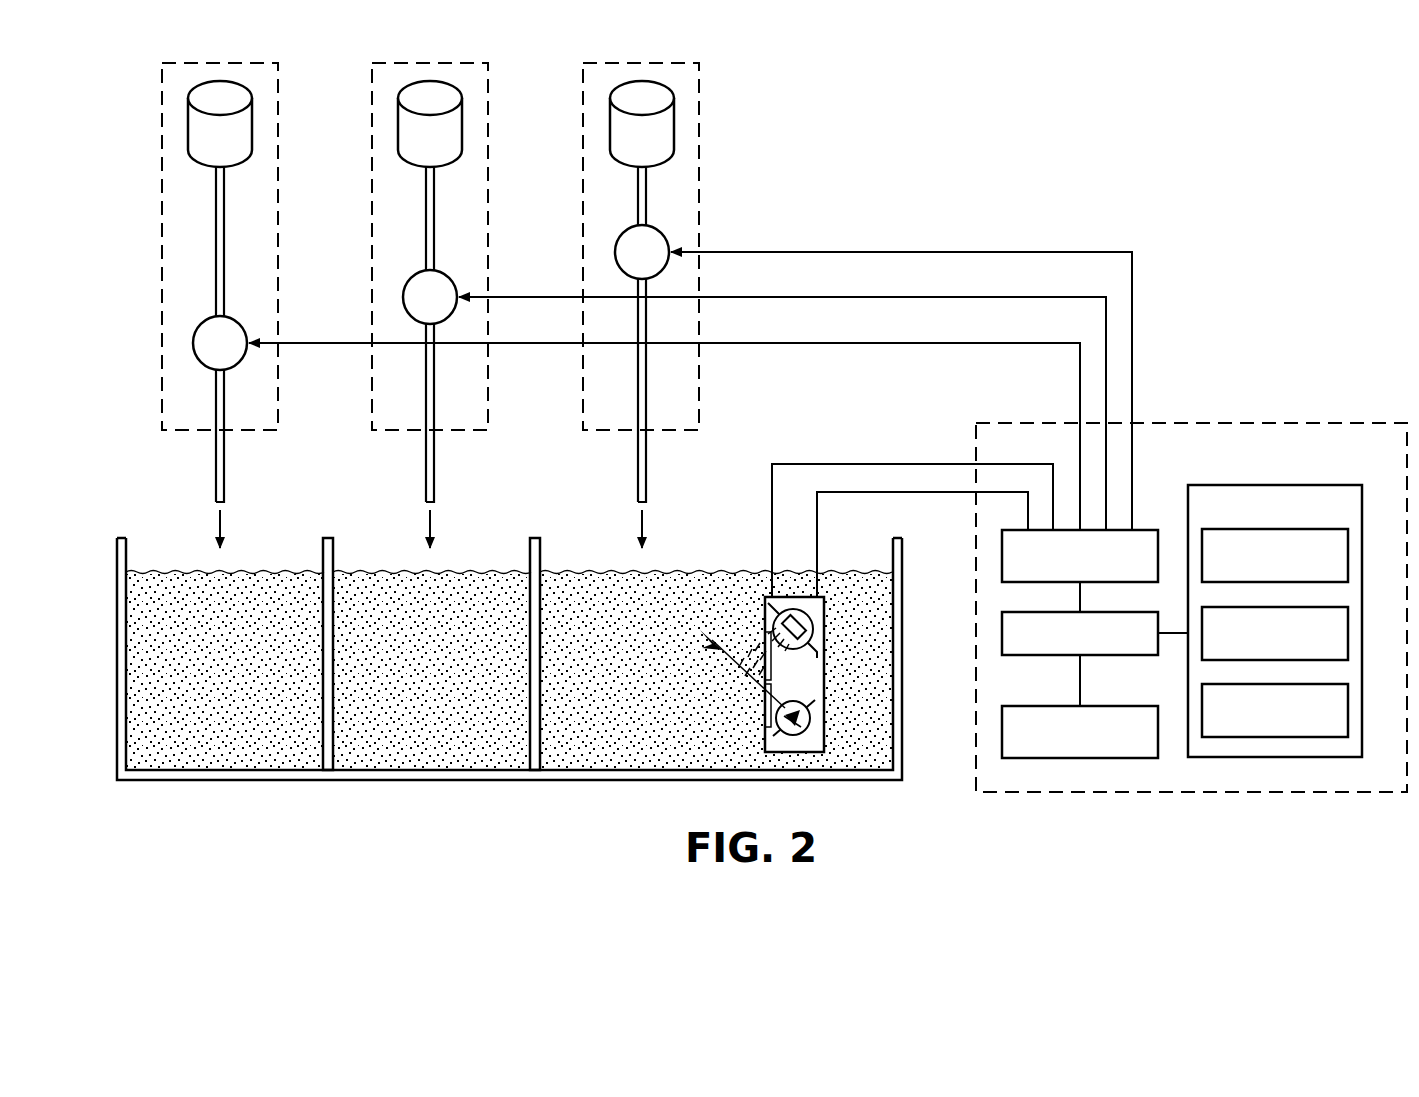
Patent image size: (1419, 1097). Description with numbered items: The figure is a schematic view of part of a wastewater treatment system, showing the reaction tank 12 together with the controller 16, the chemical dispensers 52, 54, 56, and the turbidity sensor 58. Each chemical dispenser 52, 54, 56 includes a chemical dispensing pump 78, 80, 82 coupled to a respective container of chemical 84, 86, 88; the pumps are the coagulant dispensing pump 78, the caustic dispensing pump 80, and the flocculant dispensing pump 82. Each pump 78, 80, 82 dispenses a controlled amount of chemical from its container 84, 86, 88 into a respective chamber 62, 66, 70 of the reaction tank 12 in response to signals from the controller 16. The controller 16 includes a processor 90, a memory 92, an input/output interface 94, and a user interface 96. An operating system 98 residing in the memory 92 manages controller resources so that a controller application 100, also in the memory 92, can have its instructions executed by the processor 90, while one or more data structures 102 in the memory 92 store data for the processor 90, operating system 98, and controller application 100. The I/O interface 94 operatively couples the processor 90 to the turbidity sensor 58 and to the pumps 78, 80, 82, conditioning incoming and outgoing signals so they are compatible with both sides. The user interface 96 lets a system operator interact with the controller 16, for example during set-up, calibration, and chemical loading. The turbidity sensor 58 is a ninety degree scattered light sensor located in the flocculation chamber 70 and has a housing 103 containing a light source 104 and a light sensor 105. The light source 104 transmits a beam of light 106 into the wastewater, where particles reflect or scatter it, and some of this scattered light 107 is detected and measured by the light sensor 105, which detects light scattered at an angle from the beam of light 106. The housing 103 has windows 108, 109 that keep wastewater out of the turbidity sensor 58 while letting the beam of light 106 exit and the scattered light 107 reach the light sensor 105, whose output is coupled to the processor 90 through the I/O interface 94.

The reaction tank 12 is at (138, 493).
The controller 16 is at (1303, 424).
The chemical dispenser 52 is at (280, 128).
The chemical dispenser 54 is at (490, 128).
The chemical dispenser 56 is at (701, 128).
The turbidity sensor 58 is at (810, 672).
The chamber 62 is at (192, 585).
The chamber 66 is at (404, 582).
The flocculation chamber 70 is at (612, 582).
The coagulant dispensing pump 78 is at (234, 322).
The caustic dispensing pump 80 is at (444, 276).
The flocculant dispensing pump 82 is at (656, 231).
The container of chemical 84 is at (231, 156).
The container of chemical 86 is at (441, 156).
The container of chemical 88 is at (653, 156).
The processor 90 is at (1050, 657).
The memory 92 is at (1342, 486).
The input/output interface 94 is at (1143, 535).
The user interface 96 is at (1136, 713).
The operating system 98 is at (1348, 556).
The controller application 100 is at (1348, 621).
The data structure 102 is at (1348, 697).
The housing 103 is at (828, 606).
The light source 104 is at (797, 737).
The light sensor 105 is at (793, 610).
The beam of light 106 is at (724, 653).
The scattered light 107 is at (747, 655).
The window 108 is at (769, 715).
The window 109 is at (758, 636).